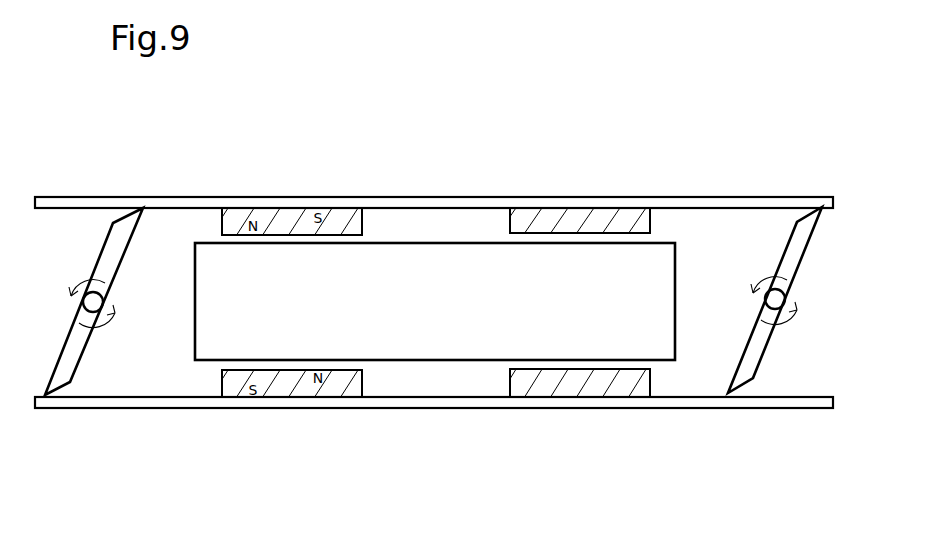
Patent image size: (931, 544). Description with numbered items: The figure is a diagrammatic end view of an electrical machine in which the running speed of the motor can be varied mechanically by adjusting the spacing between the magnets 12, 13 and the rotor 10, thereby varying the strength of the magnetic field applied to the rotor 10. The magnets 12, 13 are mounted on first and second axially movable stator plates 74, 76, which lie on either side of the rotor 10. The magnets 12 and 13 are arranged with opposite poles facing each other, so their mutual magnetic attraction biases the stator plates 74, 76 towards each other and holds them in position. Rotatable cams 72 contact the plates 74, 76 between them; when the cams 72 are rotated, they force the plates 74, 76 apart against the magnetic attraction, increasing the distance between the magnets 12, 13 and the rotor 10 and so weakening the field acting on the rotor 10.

The rotor 10 is at (422, 317).
The magnet 12 is at (580, 213).
The magnet 13 is at (573, 385).
The rotatable cam 72 is at (68, 345).
The first axially movable stator plate 74 is at (768, 193).
The second axially movable stator plate 76 is at (743, 407).